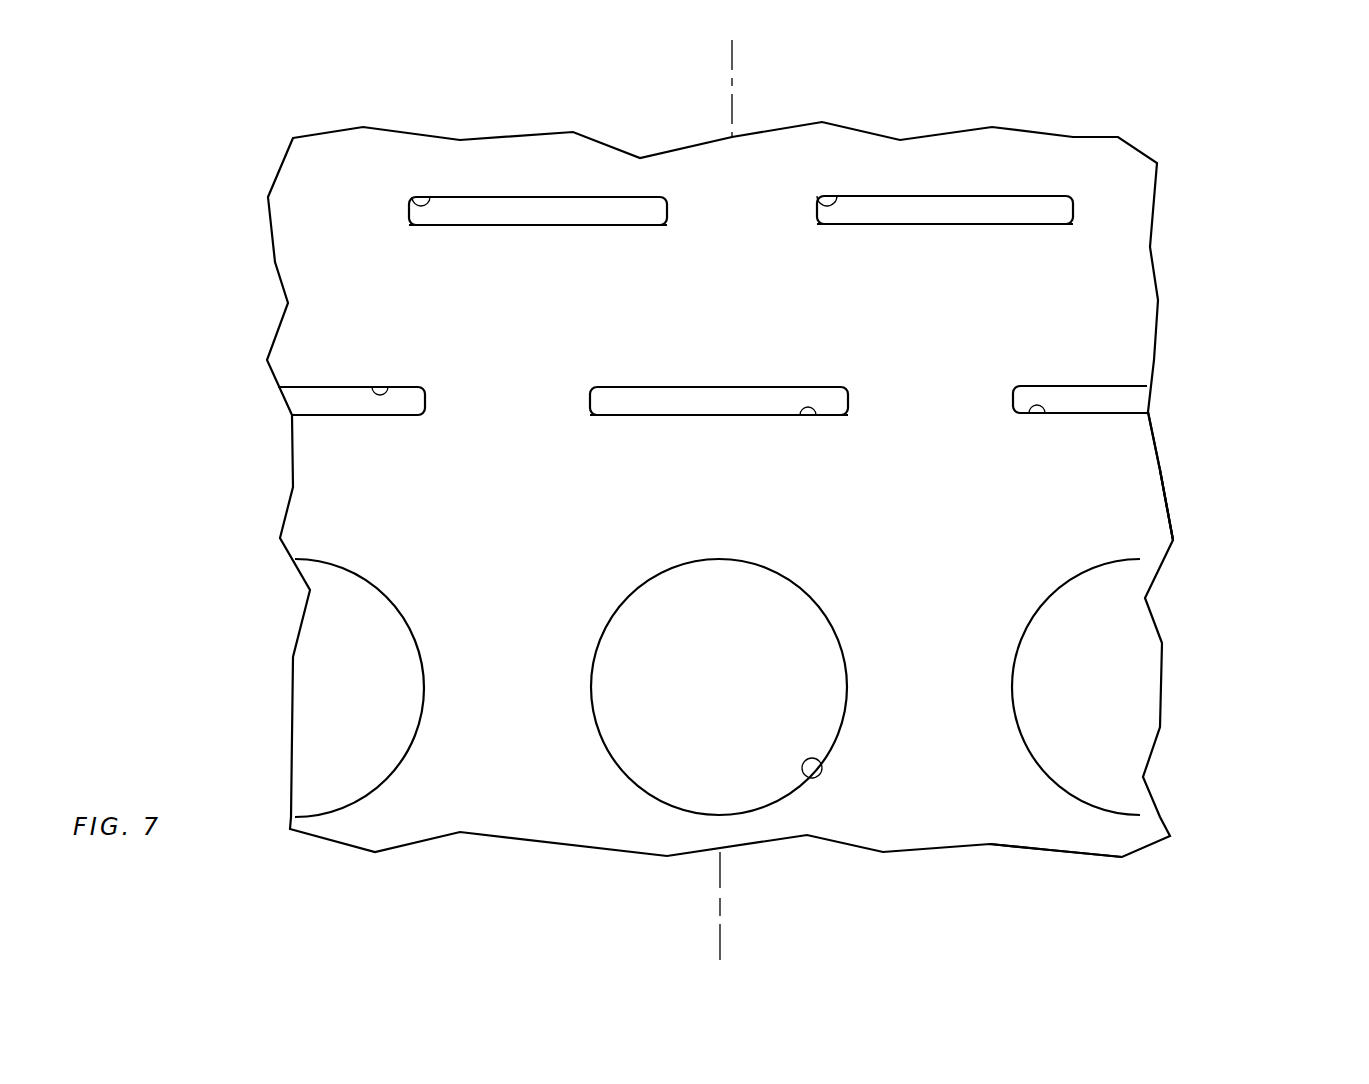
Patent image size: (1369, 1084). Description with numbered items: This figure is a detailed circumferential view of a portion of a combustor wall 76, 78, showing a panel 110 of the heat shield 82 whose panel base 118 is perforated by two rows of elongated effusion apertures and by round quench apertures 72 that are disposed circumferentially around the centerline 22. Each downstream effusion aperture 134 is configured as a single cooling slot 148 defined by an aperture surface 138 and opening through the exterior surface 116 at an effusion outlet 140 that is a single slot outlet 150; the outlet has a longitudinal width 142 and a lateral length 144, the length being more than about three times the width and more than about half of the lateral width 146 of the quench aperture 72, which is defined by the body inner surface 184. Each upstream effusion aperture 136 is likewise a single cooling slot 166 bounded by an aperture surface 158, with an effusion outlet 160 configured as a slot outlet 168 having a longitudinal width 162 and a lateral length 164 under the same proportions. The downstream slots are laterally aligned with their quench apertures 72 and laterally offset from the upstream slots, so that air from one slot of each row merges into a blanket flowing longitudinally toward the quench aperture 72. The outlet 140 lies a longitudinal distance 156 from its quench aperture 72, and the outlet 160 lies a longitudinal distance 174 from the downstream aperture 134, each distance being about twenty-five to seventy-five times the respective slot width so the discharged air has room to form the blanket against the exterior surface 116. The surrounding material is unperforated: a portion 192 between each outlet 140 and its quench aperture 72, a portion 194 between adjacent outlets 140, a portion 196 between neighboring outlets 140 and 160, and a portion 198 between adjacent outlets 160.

The centerline 22 is at (720, 935).
The quench aperture 72 is at (370, 698).
The combustor wall 76 is at (775, 455).
The combustor wall 78 is at (1197, 132).
The heat shield 82 is at (1238, 476).
The panel 110 is at (1162, 477).
The exterior surface 116 is at (1050, 830).
The panel base 118 is at (1148, 520).
The effusion aperture 134 is at (716, 389).
The cooling slot 148 is at (303, 400).
The effusion aperture 136 is at (840, 158).
The cooling slot 166 is at (648, 213).
The aperture surface 138 is at (373, 392).
The effusion outlet 140 is at (719, 461).
The slot outlet 150 is at (364, 404).
The longitudinal width 142 is at (680, 345).
The lateral length 144 is at (848, 385).
The lateral width 146 is at (845, 687).
The longitudinal distance 156 is at (713, 400).
The aperture surface 158 is at (409, 196).
The effusion outlet 160 is at (706, 257).
The slot outlet 168 is at (436, 216).
The longitudinal width 162 is at (891, 256).
The lateral length 164 is at (1073, 282).
The longitudinal distance 174 is at (575, 400).
The body inner surface 184 is at (812, 778).
The non-perforated portion 192 is at (660, 526).
The non-perforated portion 194 is at (484, 416).
The non-perforated portion 196 is at (622, 292).
The non-perforated portion 198 is at (789, 193).